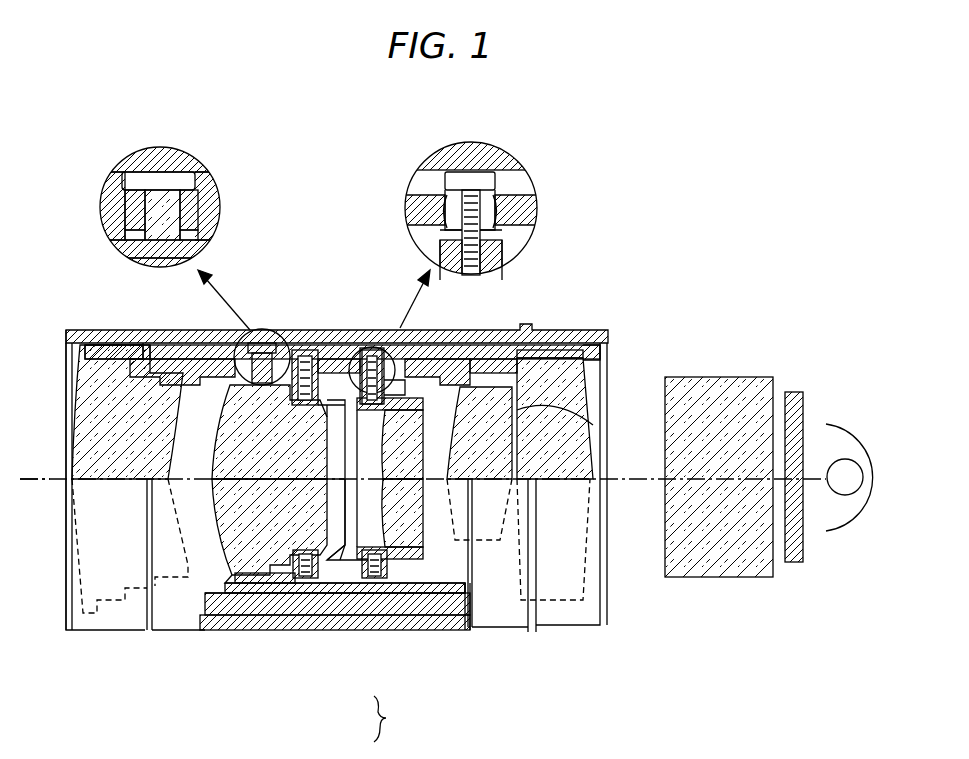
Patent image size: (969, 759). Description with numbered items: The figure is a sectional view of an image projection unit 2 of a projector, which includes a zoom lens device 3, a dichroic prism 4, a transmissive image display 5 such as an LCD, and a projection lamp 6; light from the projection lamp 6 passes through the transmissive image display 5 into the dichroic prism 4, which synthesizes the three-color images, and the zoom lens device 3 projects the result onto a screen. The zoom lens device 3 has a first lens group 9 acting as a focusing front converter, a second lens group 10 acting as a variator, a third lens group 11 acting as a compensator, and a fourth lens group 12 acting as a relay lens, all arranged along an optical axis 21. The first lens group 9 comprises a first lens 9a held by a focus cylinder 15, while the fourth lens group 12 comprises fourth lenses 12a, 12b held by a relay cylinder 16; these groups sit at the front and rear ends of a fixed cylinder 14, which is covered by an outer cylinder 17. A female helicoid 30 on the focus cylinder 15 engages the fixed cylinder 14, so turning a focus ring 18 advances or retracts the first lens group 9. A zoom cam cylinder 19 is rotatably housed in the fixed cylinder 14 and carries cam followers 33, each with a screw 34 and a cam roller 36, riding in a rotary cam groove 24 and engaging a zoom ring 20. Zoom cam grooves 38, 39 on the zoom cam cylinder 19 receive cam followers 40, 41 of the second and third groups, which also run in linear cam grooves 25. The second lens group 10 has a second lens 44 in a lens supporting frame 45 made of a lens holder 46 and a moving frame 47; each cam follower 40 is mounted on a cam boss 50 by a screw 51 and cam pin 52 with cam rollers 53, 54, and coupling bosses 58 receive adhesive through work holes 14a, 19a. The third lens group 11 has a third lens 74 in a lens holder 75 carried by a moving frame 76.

The image projection unit 2 is at (678, 243).
The zoom lens device 3 is at (594, 330).
The dichroic prism 4 is at (718, 377).
The transmissive image display 5 is at (795, 392).
The projection lamp 6 is at (847, 424).
The first lens group 9 is at (110, 612).
The first lens 9a is at (72, 425).
The second lens group 10 is at (350, 605).
The third lens group 11 is at (462, 625).
The fourth lens group 12 is at (605, 620).
The fourth lens 12a is at (580, 420).
The fourth lens 12b is at (588, 448).
The fixed cylinder 14 is at (495, 345).
The work hole 14a is at (292, 610).
The focus cylinder 15 is at (100, 345).
The relay cylinder 16 is at (593, 350).
The outer cylinder 17 is at (605, 575).
The focus ring 18 is at (72, 330).
The zoom cam cylinder 19 is at (415, 345).
The work hole 19a is at (406, 625).
The zoom ring 20 is at (172, 343).
The optical axis 21 is at (42, 490).
The rotary cam groove 24 is at (125, 235).
The linear cam groove 25 is at (335, 345).
The female helicoid 30 is at (147, 345).
The cam follower 33 is at (262, 330).
The screw 34 is at (140, 172).
The cam roller 36 is at (125, 200).
The zoom cam groove 38 is at (318, 392).
The zoom cam groove 39 is at (405, 385).
The cam follower 40 is at (305, 348).
The cam follower 41 is at (371, 348).
The second lens 44 is at (212, 462).
The lens supporting frame 45 is at (393, 719).
The lens holder 46 is at (330, 418).
The moving frame 47 is at (330, 630).
The cam boss 50 is at (505, 252).
The screw 51 is at (445, 170).
The cam pin 52 is at (440, 235).
The cam roller 53 is at (445, 188).
The cam roller 54 is at (443, 200).
The coupling boss 58 is at (388, 565).
The third lens 74 is at (424, 450).
The lens holder 75 is at (375, 520).
The moving frame 76 is at (356, 548).